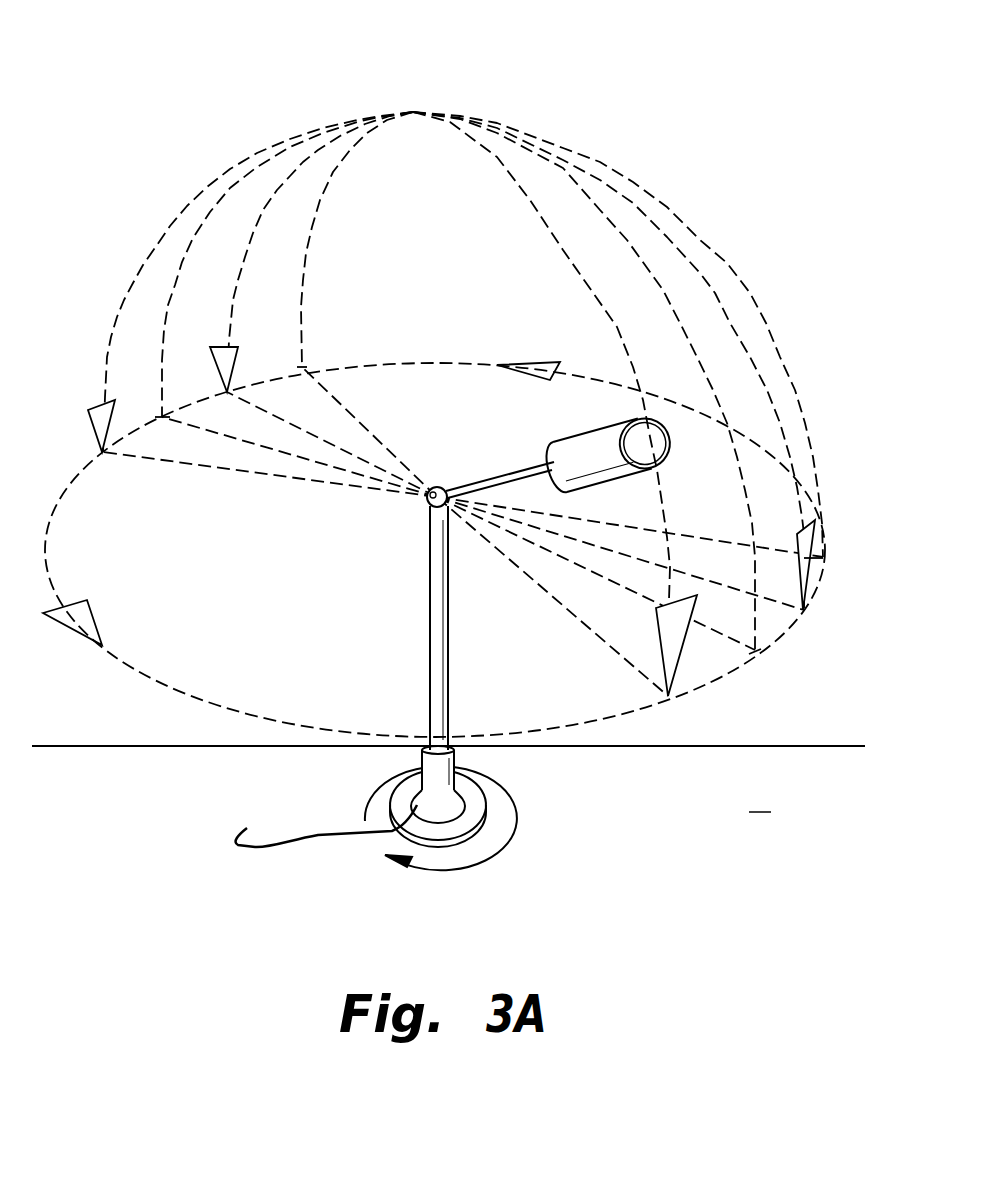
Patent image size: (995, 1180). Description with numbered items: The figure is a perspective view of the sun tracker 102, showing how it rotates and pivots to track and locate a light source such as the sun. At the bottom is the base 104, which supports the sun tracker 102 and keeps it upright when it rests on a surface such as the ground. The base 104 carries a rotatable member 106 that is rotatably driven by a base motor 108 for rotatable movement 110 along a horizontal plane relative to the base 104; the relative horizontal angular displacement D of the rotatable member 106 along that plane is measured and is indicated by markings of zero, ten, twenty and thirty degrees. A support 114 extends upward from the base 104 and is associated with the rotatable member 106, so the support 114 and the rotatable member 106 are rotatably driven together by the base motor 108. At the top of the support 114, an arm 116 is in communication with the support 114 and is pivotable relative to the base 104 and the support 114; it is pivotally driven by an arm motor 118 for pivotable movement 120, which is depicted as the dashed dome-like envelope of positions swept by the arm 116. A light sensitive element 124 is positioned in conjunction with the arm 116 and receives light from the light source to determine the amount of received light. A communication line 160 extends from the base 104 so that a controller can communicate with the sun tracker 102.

The sun tracker 102 is at (186, 70).
The base 104 is at (486, 818).
The rotatable member 106 is at (456, 752).
The base motor 108 is at (417, 805).
The rotatable movement 110 is at (475, 884).
The support 114 is at (430, 627).
The arm 116 is at (497, 472).
The arm motor 118 is at (398, 533).
The pivotable movement 120 is at (648, 138).
The light sensitive element 124 is at (548, 413).
The communication line 160 is at (307, 838).
The relative horizontal angular displacement D is at (733, 703).